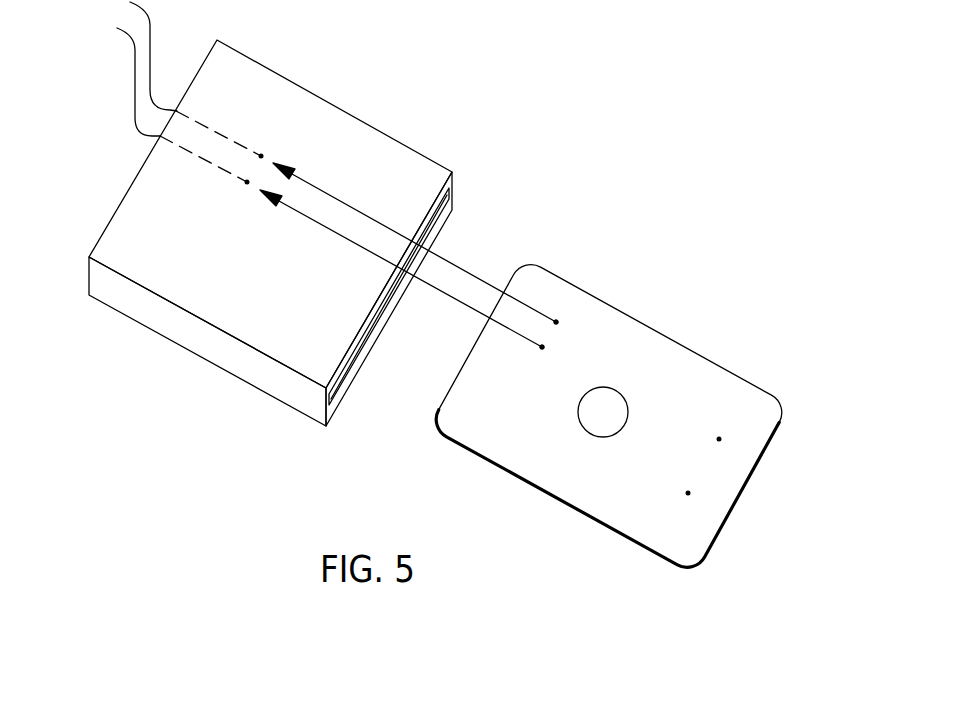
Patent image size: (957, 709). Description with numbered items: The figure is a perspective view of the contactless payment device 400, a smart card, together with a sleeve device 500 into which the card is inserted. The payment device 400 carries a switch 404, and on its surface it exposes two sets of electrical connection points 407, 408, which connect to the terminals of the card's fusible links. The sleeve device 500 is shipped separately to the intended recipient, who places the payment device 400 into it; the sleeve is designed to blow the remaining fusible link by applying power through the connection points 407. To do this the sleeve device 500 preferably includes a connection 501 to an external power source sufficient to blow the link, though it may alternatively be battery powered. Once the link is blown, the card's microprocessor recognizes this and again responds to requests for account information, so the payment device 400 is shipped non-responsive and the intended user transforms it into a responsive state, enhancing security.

The contactless payment device 400 is at (760, 383).
The switch 404 is at (625, 397).
The set of electrical connection points 407 is at (550, 347).
The set of electrical connection points 408 is at (724, 440).
The sleeve device 500 is at (400, 133).
The connection 501 is at (110, 22).